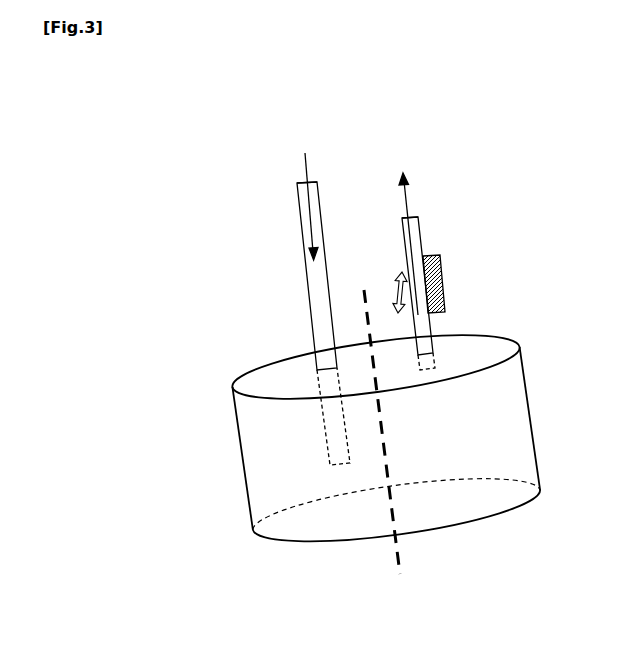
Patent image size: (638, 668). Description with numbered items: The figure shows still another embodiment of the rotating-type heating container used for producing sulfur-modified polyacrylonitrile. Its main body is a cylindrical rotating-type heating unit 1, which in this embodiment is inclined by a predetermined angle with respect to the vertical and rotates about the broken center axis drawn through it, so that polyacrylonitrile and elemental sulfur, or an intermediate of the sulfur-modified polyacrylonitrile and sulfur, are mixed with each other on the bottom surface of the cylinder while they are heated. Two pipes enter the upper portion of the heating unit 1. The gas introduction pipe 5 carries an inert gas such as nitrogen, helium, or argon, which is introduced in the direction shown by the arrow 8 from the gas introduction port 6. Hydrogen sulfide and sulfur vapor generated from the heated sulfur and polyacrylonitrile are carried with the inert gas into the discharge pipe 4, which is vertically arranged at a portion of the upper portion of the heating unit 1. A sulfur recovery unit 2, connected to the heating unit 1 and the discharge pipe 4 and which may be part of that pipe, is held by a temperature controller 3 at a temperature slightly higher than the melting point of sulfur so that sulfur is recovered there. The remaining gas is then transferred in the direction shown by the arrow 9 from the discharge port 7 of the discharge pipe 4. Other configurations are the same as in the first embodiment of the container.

The rotating-type heating unit 1 is at (400, 461).
The sulfur recovery unit 2 is at (391, 293).
The temperature controller 3 is at (484, 266).
The discharge pipe 4 is at (470, 266).
The gas introduction pipe 5 is at (246, 323).
The gas introduction port 6 is at (293, 182).
The discharge port 7 is at (398, 215).
The arrow 8 is at (303, 192).
The arrow 9 is at (406, 222).